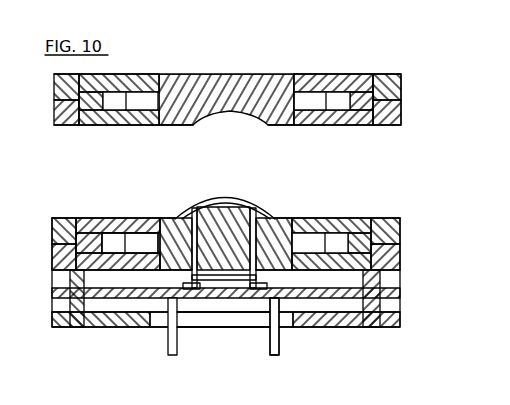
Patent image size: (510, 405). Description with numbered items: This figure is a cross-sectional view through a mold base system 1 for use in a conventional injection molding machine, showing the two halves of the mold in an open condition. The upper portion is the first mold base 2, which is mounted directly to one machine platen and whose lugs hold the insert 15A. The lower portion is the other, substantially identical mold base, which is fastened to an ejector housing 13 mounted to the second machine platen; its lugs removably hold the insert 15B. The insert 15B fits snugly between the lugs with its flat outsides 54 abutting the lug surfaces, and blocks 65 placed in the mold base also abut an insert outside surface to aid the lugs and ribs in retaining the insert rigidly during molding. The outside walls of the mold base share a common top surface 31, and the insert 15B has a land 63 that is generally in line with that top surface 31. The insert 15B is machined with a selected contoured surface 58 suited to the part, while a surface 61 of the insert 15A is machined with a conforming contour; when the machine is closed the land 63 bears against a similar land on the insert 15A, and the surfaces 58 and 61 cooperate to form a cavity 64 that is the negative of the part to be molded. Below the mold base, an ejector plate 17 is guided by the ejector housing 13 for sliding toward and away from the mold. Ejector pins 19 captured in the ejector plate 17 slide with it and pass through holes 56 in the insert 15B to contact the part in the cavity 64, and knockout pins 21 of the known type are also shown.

The mold base system 1 is at (206, 271).
The first mold base 2 is at (227, 87).
The ejector housing 13 is at (241, 334).
The insert 15A is at (203, 92).
The insert 15B is at (275, 243).
The ejector plate 17 is at (120, 293).
The ejector pins 19 is at (262, 281).
The knockout pins 21 is at (282, 343).
The top surface 31 is at (58, 216).
The flat outsides 54 is at (135, 216).
The holes 56 is at (190, 253).
The contoured surface 58 is at (241, 201).
The surface 61 is at (193, 128).
The land 63 is at (163, 216).
The cavity 64 is at (224, 200).
The blocks 65 is at (364, 213).